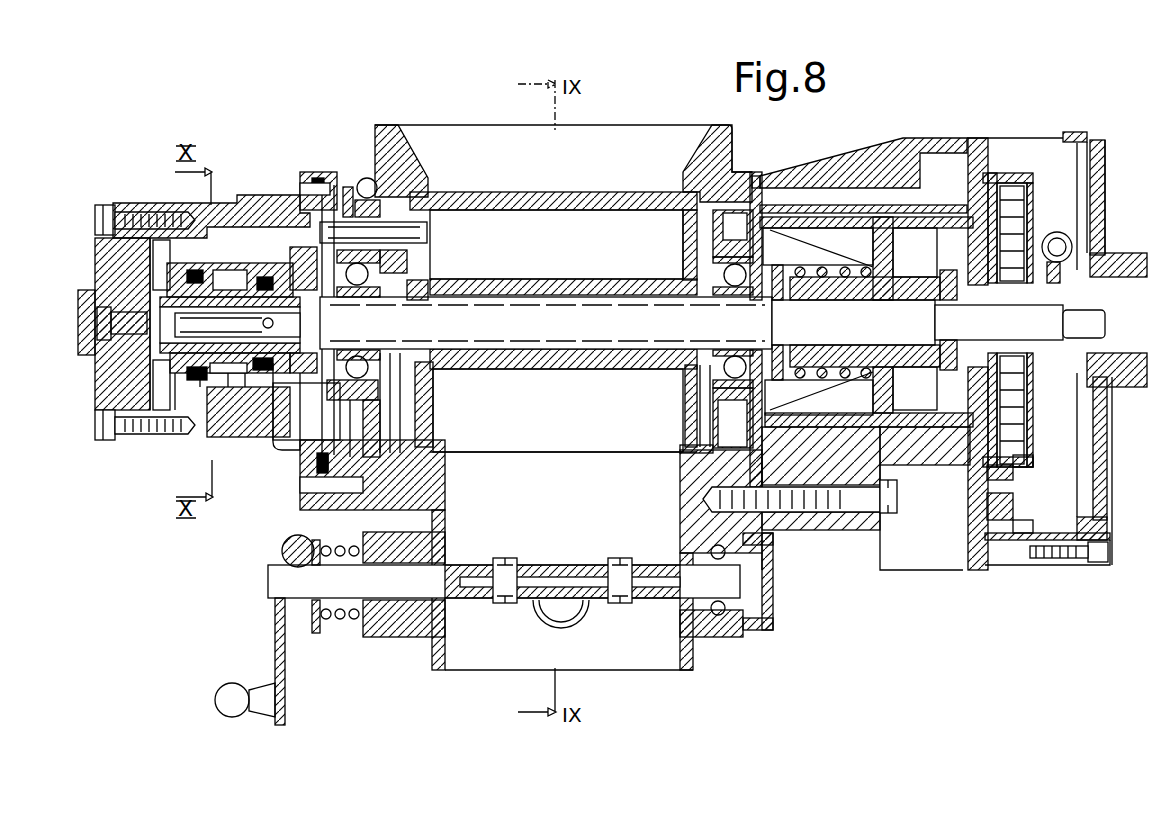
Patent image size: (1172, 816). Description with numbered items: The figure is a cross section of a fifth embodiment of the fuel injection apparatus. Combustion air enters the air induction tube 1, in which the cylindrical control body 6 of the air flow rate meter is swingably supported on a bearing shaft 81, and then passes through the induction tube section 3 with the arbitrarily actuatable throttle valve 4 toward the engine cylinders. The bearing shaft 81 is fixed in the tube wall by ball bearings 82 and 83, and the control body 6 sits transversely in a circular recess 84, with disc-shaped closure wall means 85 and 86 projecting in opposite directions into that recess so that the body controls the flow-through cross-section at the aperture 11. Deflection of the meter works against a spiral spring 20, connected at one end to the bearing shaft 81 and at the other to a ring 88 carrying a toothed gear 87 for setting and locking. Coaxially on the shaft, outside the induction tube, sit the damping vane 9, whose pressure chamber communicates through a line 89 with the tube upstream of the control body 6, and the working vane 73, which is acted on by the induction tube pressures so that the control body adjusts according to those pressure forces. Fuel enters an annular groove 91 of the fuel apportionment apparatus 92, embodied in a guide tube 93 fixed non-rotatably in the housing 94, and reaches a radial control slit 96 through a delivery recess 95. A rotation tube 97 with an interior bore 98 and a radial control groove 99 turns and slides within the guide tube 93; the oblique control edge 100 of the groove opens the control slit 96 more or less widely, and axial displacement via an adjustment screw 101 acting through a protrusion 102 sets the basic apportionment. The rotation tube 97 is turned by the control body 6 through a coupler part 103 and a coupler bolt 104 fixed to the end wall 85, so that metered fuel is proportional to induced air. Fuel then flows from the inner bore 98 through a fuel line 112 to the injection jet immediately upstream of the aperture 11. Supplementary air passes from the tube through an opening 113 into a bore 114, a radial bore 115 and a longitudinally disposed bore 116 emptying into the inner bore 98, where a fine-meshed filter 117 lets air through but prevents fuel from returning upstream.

The air induction tube 1 is at (633, 140).
The induction tube section 3 is at (536, 555).
The throttle valve 4 is at (663, 577).
The control body 6 is at (510, 200).
The damping vane 9 is at (877, 225).
The aperture 11 is at (635, 192).
The spiral spring 20 is at (1017, 210).
The working vane 73 is at (897, 467).
The bearing shaft 81 is at (712, 323).
The ball bearing 82 is at (410, 263).
The ball bearing 83 is at (720, 273).
The circular recess 84 is at (688, 447).
The closure wall means 85 is at (428, 427).
The closure wall means 86 is at (692, 397).
The toothed gear 87 is at (1027, 480).
The ring 88 is at (1033, 463).
The line 89 is at (748, 197).
The annular groove 91 is at (272, 450).
The fuel apportionment apparatus 92 is at (241, 195).
The guide tube 93 is at (190, 390).
The housing 94 is at (242, 372).
The delivery recess 95 is at (233, 268).
The control slit 96 is at (228, 264).
The rotation tube 97 is at (213, 378).
The interior bore 98 is at (282, 368).
The control groove 99 is at (227, 372).
The control edge 100 is at (267, 290).
The adjustment screw 101 is at (123, 345).
The protrusion 102 is at (108, 440).
The coupler part 103 is at (268, 230).
The coupler bolt 104 is at (413, 233).
The fuel line 112 is at (330, 312).
The opening 113 is at (420, 182).
The bore 114 is at (220, 232).
The radial bore 115 is at (160, 215).
The longitudinally disposed bore 116 is at (140, 292).
The filter 117 is at (160, 437).